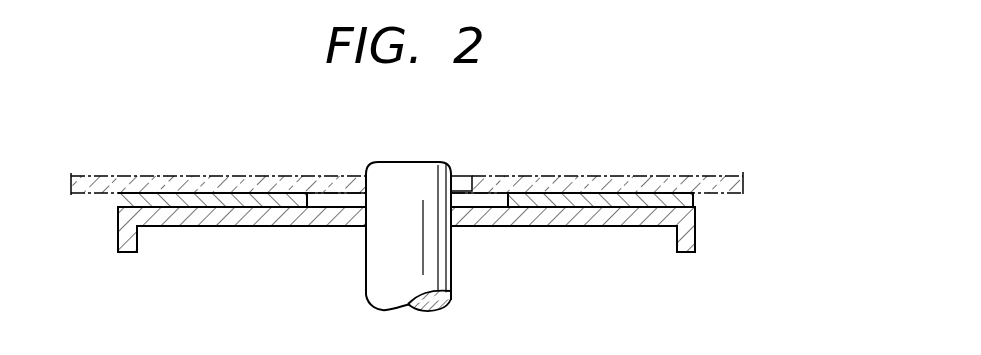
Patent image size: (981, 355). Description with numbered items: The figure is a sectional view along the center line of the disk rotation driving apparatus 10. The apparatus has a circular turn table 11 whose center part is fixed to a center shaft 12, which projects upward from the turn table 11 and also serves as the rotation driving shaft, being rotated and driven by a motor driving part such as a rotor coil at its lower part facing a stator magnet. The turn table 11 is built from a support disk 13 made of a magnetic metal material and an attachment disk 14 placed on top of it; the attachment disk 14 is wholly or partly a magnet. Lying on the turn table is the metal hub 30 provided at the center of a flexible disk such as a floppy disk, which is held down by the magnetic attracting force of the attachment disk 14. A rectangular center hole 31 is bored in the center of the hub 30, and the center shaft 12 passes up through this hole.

The disk rotation driving apparatus 10 is at (659, 155).
The turn table 11 is at (596, 232).
The center shaft 12 is at (372, 268).
The support disk 13 is at (505, 209).
The attachment disk 14 is at (554, 196).
The metal hub 30 is at (162, 177).
The center hole 31 is at (458, 177).